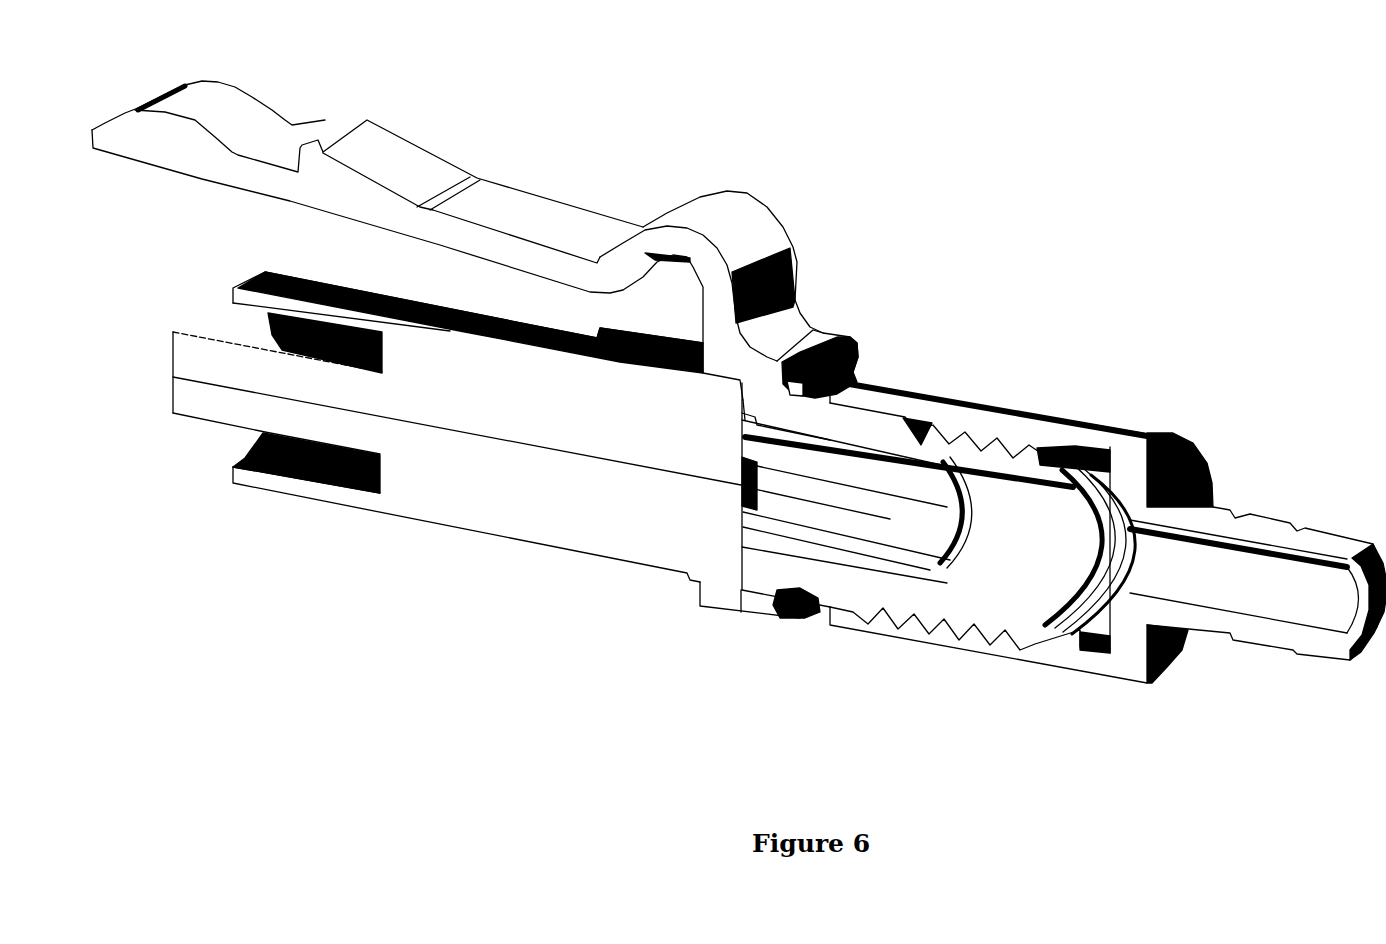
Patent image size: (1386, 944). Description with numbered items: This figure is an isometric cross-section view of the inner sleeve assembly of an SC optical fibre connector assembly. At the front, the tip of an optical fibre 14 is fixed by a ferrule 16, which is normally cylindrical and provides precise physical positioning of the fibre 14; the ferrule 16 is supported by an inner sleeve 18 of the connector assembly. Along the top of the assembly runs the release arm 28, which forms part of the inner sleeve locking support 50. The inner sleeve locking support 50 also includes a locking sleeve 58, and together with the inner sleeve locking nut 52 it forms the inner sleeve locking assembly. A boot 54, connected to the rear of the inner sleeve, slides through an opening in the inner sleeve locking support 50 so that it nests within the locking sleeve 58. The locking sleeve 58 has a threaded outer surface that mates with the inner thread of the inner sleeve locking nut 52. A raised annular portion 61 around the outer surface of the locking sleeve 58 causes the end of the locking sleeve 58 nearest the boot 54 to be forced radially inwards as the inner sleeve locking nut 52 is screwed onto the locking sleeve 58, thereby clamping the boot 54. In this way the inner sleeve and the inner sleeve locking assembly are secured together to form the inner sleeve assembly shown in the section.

The optical fibre 14 is at (197, 378).
The ferrule 16 is at (183, 410).
The inner sleeve 18 is at (437, 490).
The release arm 28 is at (228, 100).
The inner sleeve locking support 50 is at (728, 610).
The inner sleeve locking nut 52 is at (1057, 407).
The boot 54 is at (893, 510).
The locking sleeve 58 is at (1020, 570).
The raised annular portion 61 is at (828, 398).